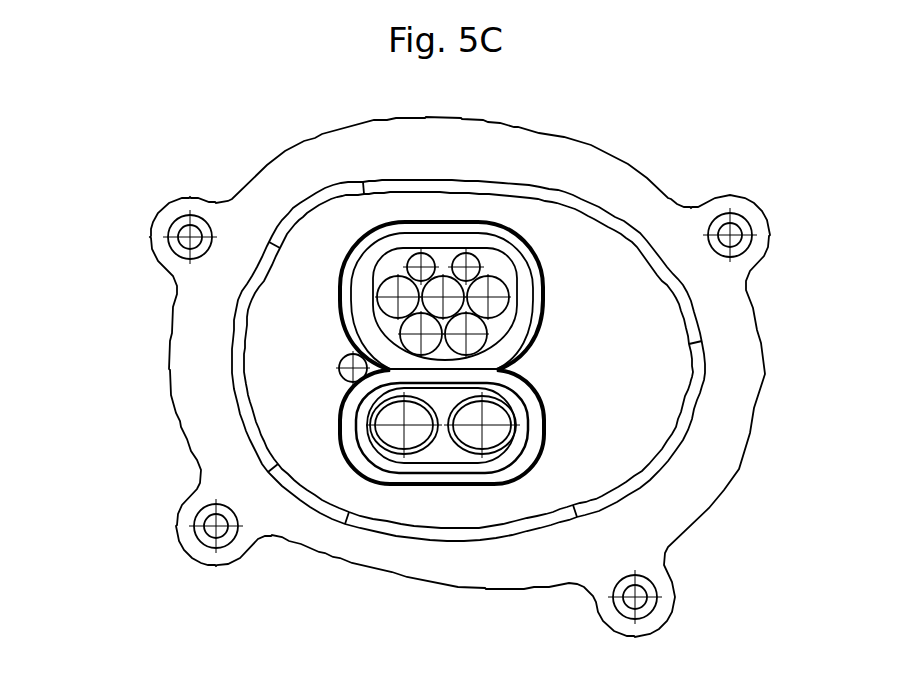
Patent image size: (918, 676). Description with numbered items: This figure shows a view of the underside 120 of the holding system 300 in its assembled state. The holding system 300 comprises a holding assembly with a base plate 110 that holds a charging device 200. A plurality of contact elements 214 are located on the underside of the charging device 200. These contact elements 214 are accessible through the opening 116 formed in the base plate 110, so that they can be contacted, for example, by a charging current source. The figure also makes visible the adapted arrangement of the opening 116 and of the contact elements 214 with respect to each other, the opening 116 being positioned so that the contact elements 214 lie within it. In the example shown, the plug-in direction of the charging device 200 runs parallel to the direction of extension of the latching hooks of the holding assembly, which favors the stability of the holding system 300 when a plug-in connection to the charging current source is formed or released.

The holding system 300 is at (158, 96).
The base plate 110 is at (170, 378).
The underside 120 is at (285, 410).
The opening 116 is at (527, 250).
The charging device 200 is at (385, 257).
The contact element 214 is at (448, 302).